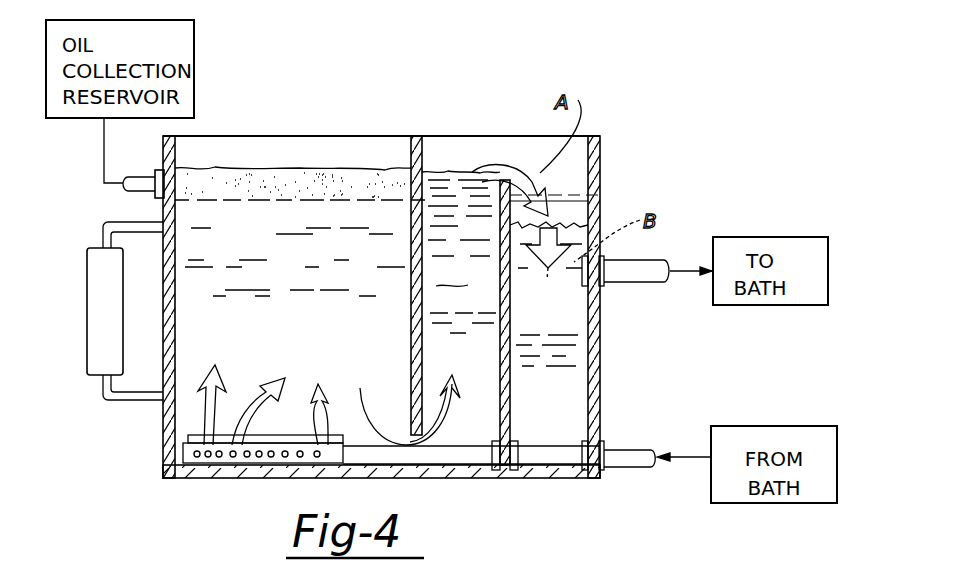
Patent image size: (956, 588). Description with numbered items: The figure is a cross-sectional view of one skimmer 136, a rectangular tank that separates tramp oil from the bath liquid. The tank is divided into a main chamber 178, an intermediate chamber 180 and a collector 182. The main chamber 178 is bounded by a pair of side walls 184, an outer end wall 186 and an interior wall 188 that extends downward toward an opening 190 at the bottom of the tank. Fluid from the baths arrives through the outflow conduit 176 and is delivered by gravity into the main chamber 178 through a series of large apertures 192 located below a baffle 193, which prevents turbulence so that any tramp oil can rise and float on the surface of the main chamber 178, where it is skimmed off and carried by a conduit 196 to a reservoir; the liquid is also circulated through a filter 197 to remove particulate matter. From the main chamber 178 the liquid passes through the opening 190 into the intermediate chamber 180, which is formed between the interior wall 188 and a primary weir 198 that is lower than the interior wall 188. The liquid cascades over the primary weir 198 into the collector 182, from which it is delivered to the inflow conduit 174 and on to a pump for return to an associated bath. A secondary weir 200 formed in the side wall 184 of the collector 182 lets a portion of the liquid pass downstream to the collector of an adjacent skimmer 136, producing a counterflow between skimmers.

The skimmer 136 is at (396, 114).
The inflow conduit 174 is at (624, 283).
The outflow conduit 176 is at (632, 455).
The main chamber 178 is at (338, 302).
The intermediate chamber 180 is at (480, 288).
The collector 182 is at (568, 323).
The side wall 184 is at (272, 156).
The outer end wall 186 is at (178, 157).
The interior wall 188 is at (412, 328).
The opening 190 is at (399, 406).
The apertures 192 is at (197, 458).
The baffle 193 is at (245, 396).
The conduit 196 is at (132, 192).
The filter 197 is at (103, 287).
The primary weir 198 is at (482, 176).
The secondary weir 200 is at (586, 218).